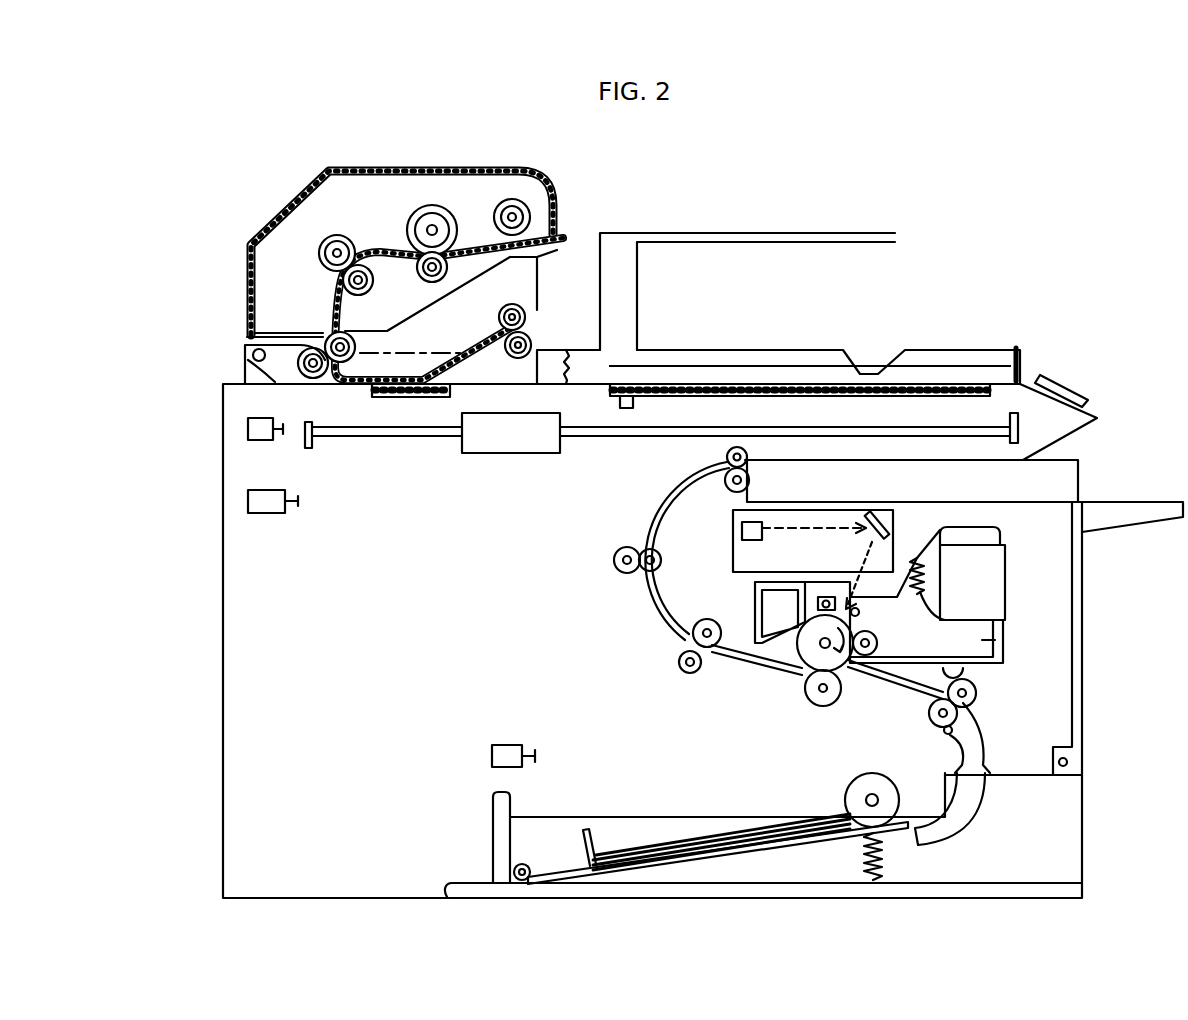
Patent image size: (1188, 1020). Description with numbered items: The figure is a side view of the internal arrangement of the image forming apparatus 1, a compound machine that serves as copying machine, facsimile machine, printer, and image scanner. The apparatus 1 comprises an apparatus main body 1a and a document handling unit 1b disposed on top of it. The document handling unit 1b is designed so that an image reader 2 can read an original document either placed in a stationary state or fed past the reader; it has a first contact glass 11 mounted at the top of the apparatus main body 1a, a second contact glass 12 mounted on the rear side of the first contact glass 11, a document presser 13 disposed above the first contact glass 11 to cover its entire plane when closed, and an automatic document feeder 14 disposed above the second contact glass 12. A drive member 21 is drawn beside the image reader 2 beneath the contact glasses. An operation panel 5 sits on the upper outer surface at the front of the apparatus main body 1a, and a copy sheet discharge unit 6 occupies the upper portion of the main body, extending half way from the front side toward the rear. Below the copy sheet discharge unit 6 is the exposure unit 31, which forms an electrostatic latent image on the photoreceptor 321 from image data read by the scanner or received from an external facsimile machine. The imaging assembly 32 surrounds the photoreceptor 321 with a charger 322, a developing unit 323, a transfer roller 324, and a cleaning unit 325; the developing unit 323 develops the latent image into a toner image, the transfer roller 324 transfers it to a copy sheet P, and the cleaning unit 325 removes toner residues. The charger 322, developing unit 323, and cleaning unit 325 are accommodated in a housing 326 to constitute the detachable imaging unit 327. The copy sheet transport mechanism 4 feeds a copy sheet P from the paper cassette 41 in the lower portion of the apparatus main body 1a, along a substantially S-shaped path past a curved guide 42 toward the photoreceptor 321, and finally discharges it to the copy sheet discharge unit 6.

The image forming apparatus 1 is at (1074, 148).
The apparatus main body 1a is at (1080, 473).
The document handling unit 1b is at (1027, 343).
The image reader 2 is at (459, 457).
The copy sheet transport mechanism 4 is at (803, 764).
The operation panel 5 is at (1062, 385).
The copy sheet discharge unit 6 is at (797, 486).
The first contact glass 11 is at (680, 397).
The second contact glass 12 is at (400, 398).
The document presser 13 is at (795, 356).
The automatic document feeder 14 is at (240, 138).
The drive rod 21 is at (595, 438).
The exposure unit 31 is at (732, 550).
The imaging assembly 32 is at (1030, 573).
The paper cassette 41 is at (740, 858).
The curved guide 42 is at (652, 618).
The photoreceptor 321 is at (813, 662).
The charger 322 is at (826, 597).
The developing unit 323 is at (982, 640).
The transfer roller 324 is at (828, 704).
The cleaning unit 325 is at (768, 606).
The housing 326 is at (963, 528).
The imaging unit 327 is at (1004, 548).
The copy sheet P is at (683, 840).